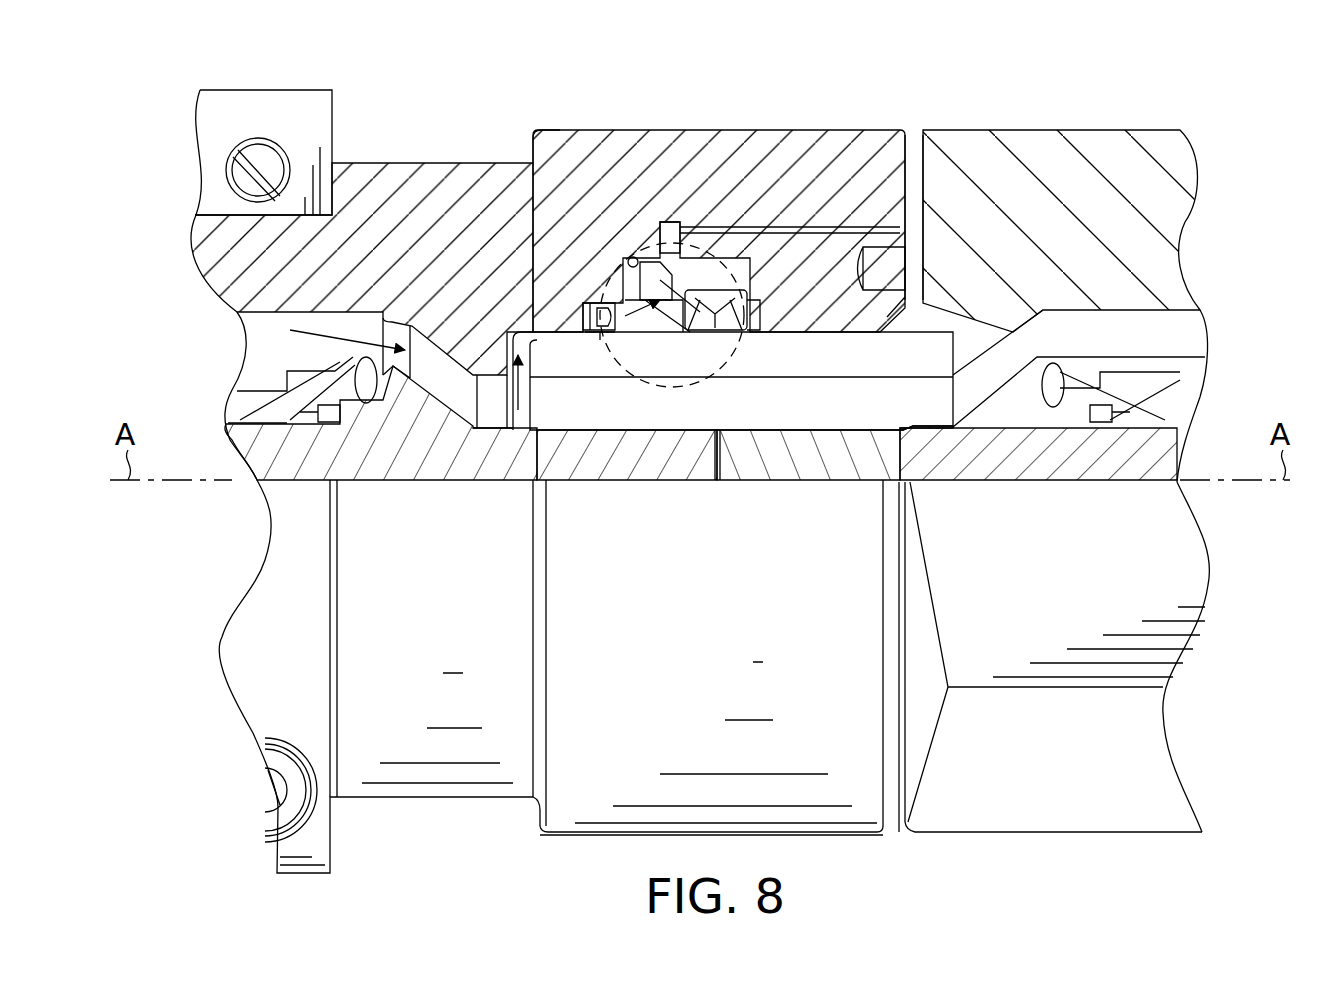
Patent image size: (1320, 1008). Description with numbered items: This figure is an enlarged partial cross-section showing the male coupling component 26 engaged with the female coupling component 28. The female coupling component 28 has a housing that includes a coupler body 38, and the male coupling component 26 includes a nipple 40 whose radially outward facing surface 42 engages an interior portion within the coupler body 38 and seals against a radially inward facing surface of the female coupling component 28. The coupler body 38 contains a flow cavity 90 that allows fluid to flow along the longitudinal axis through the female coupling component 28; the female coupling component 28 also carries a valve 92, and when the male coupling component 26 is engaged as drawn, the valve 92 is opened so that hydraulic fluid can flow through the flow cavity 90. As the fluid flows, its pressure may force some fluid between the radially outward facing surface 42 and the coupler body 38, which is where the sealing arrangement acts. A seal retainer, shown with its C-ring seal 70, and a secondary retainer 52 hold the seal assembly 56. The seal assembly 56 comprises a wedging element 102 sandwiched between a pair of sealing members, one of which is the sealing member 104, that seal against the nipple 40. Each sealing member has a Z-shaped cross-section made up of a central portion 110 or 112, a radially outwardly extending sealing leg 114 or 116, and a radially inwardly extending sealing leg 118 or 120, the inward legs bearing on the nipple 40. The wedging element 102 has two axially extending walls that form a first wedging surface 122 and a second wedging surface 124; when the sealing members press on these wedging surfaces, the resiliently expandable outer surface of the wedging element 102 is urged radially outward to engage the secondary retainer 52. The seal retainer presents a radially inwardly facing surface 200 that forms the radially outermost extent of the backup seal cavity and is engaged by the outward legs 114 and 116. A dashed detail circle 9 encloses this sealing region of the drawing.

The detail circle 9 is at (730, 380).
The male coupling component 26 is at (1020, 108).
The female coupling component 28 is at (628, 126).
The coupler body 38 is at (497, 178).
The nipple 40 is at (556, 355).
The radially outward facing surface 42 is at (593, 302).
The secondary retainer 52 is at (915, 183).
The seal assembly 56 is at (878, 326).
The C-ring seal 70 is at (592, 355).
The flow cavity 90 is at (347, 334).
The valve 92 is at (438, 466).
The wedging element 102 is at (706, 290).
The sealing member 104 is at (660, 302).
The central portion 110 is at (630, 254).
The central portion 112 is at (726, 290).
The radially outwardly extending sealing leg 114 is at (672, 224).
The radially outwardly extending sealing leg 116 is at (760, 282).
The radially inwardly extending sealing leg 118 is at (714, 322).
The radially inwardly extending sealing leg 120 is at (721, 332).
The first wedging surface 122 is at (668, 316).
The second wedging surface 124 is at (740, 302).
The radially inwardly facing surface 200 is at (712, 290).